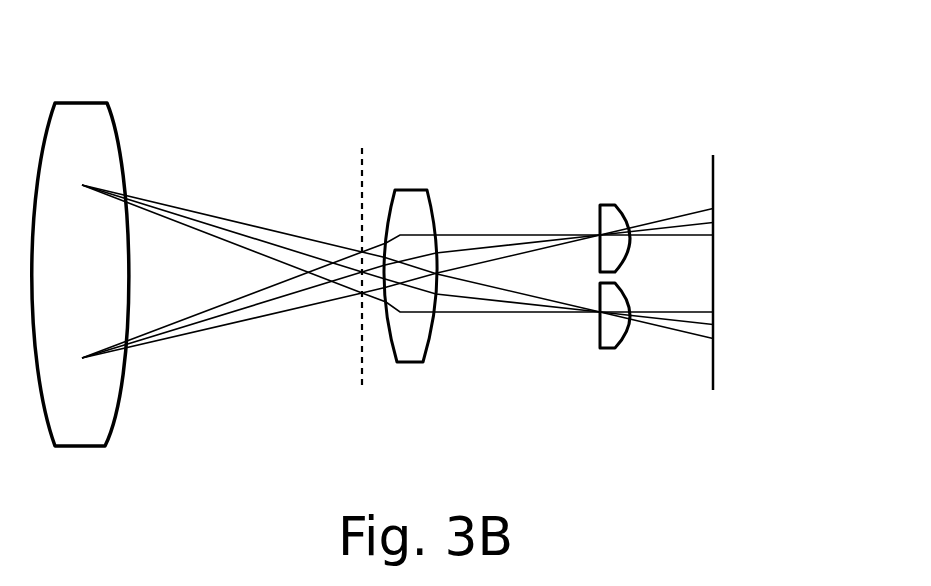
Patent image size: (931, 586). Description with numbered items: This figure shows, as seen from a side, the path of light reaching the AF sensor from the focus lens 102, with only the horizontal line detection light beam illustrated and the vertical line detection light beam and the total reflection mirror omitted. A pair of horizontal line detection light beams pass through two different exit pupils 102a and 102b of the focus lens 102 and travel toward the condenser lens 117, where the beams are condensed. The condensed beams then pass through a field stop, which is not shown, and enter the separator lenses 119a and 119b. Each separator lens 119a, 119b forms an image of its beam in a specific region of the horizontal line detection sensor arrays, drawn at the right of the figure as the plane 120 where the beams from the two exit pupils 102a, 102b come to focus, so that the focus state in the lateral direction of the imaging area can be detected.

The focus lens 102 is at (85, 103).
The exit pupil 102a is at (82, 358).
The exit pupil 102b is at (82, 185).
The condenser lens 117 is at (410, 190).
The separator lens 119a is at (612, 205).
The separator lens 119b is at (606, 349).
The image plane / sensor 120 is at (716, 184).